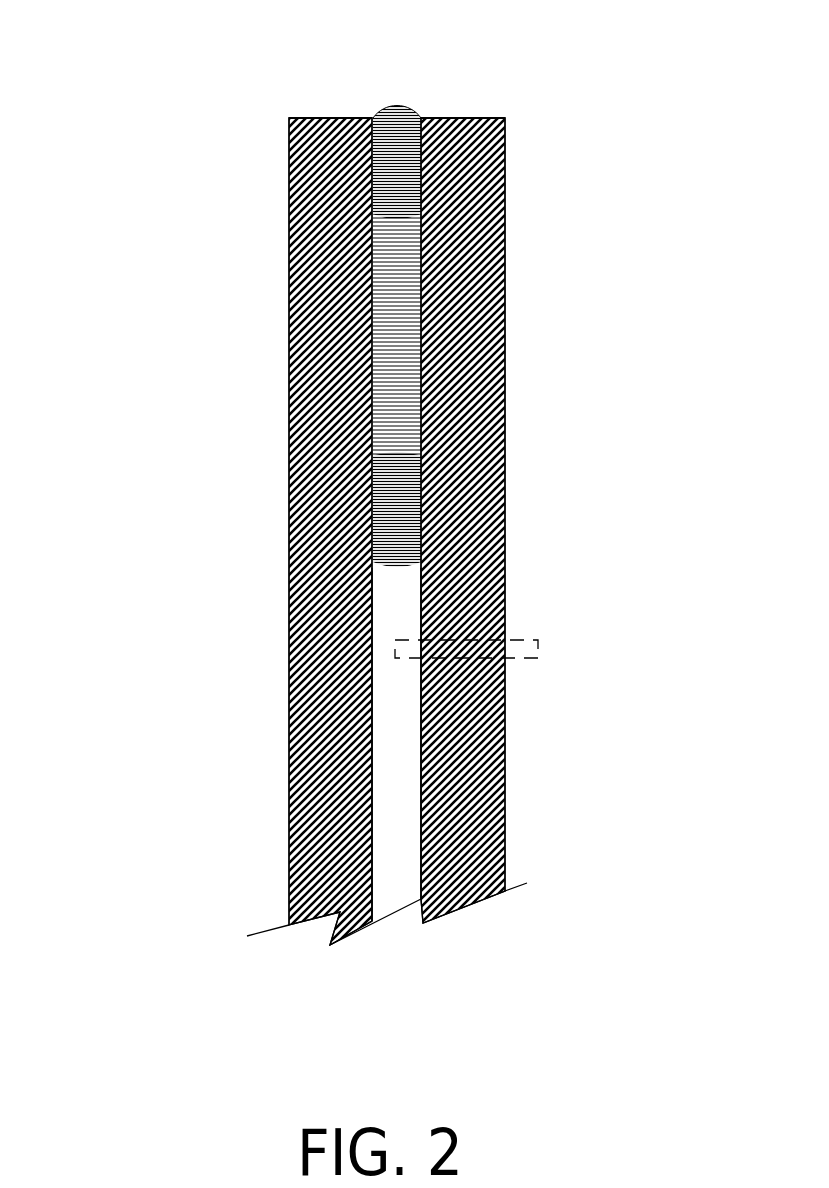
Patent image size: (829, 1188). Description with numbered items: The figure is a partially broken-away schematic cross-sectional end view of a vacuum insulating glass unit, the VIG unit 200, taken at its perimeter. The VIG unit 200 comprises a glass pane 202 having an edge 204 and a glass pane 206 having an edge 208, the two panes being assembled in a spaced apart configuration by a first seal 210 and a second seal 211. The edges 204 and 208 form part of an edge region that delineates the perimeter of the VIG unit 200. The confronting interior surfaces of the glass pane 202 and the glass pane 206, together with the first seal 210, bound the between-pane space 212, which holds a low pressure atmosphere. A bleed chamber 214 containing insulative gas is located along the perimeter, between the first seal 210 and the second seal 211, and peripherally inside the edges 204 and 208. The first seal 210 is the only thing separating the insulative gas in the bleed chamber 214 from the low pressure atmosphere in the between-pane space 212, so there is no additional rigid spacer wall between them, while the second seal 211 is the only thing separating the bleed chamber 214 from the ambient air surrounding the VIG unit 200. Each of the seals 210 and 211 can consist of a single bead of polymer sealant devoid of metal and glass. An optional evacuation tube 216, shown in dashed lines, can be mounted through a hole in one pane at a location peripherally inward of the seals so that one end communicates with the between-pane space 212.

The VIG unit 200 is at (158, 195).
The glass pane 202 is at (318, 737).
The edge 204 is at (333, 118).
The glass pane 206 is at (472, 733).
The edge 208 is at (440, 118).
The first seal 210 is at (390, 478).
The second seal 211 is at (392, 158).
The between-pane space 212 is at (398, 621).
The bleed chamber 214 is at (402, 382).
The evacuation tube 216 is at (538, 643).